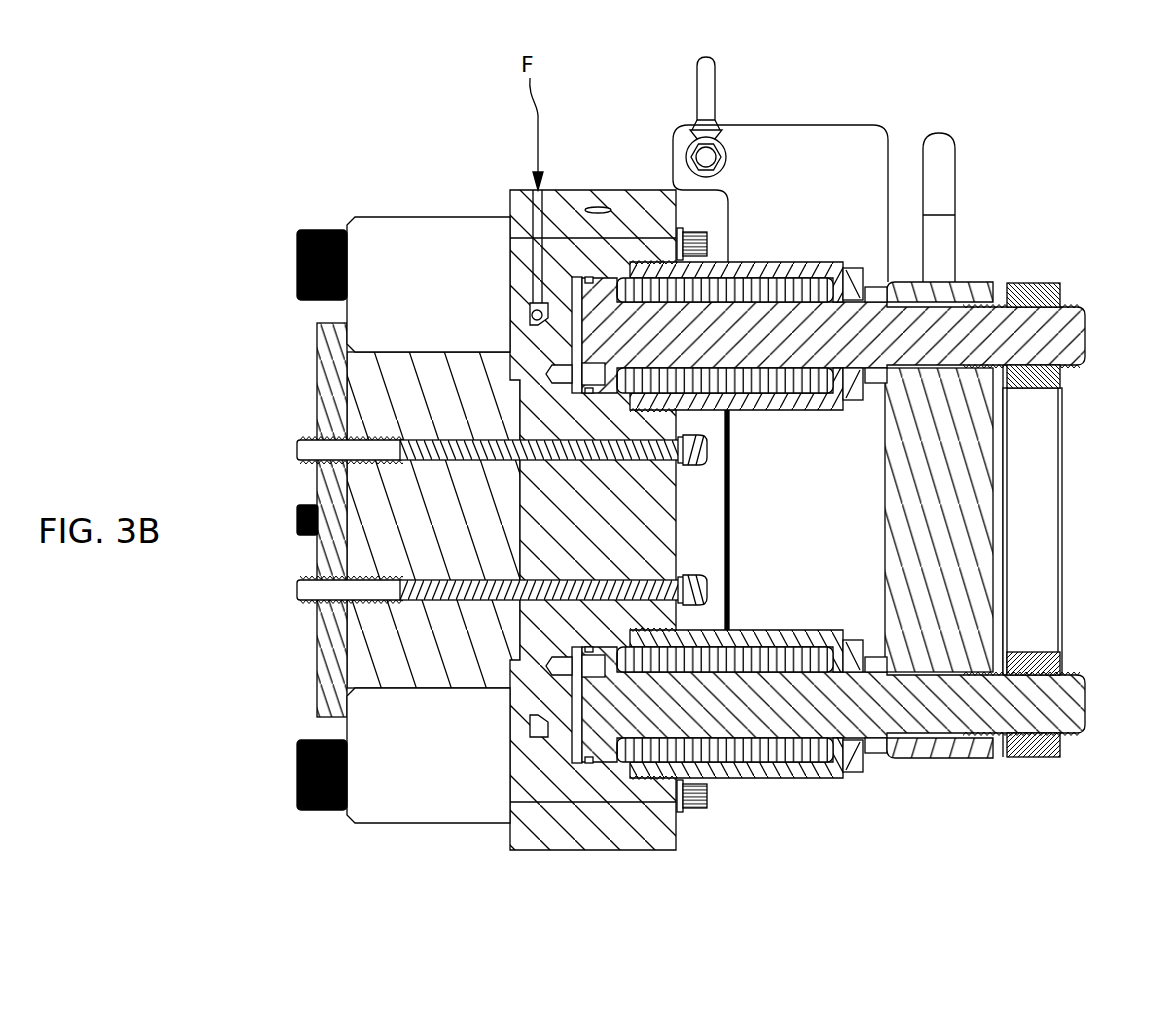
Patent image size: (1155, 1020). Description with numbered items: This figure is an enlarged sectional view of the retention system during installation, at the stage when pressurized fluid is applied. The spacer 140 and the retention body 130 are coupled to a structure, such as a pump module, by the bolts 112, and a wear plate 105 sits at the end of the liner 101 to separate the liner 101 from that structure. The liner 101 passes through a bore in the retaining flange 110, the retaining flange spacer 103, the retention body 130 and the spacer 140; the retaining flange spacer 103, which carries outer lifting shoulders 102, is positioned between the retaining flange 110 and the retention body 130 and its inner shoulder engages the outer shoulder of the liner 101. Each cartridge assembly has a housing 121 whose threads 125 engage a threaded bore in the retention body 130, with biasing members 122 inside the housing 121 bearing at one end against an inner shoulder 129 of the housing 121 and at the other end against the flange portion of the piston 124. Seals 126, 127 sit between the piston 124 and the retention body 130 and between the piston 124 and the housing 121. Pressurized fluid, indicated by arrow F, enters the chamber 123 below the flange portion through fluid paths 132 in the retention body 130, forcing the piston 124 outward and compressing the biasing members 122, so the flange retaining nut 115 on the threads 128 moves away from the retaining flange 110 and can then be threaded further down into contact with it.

The liner 101 is at (1063, 453).
The outer lifting shoulders 102 is at (885, 128).
The retaining flange spacer 103 is at (792, 582).
The wear plate 105 is at (323, 675).
The retaining flange 110 is at (961, 283).
The bolts 112 is at (410, 437).
The flange retaining nut 115 is at (1017, 283).
The housing 121 is at (783, 290).
The biasing members 122 is at (815, 283).
The chamber 123 is at (553, 345).
The piston 124 is at (836, 342).
The threads 125 is at (645, 262).
The seal 126 is at (590, 275).
The seal 127 is at (840, 287).
The threads 128 is at (1020, 308).
The inner shoulder 129 is at (858, 398).
The retention body 130 is at (553, 187).
The fluid paths 132 is at (530, 208).
The spacer 140 is at (406, 217).